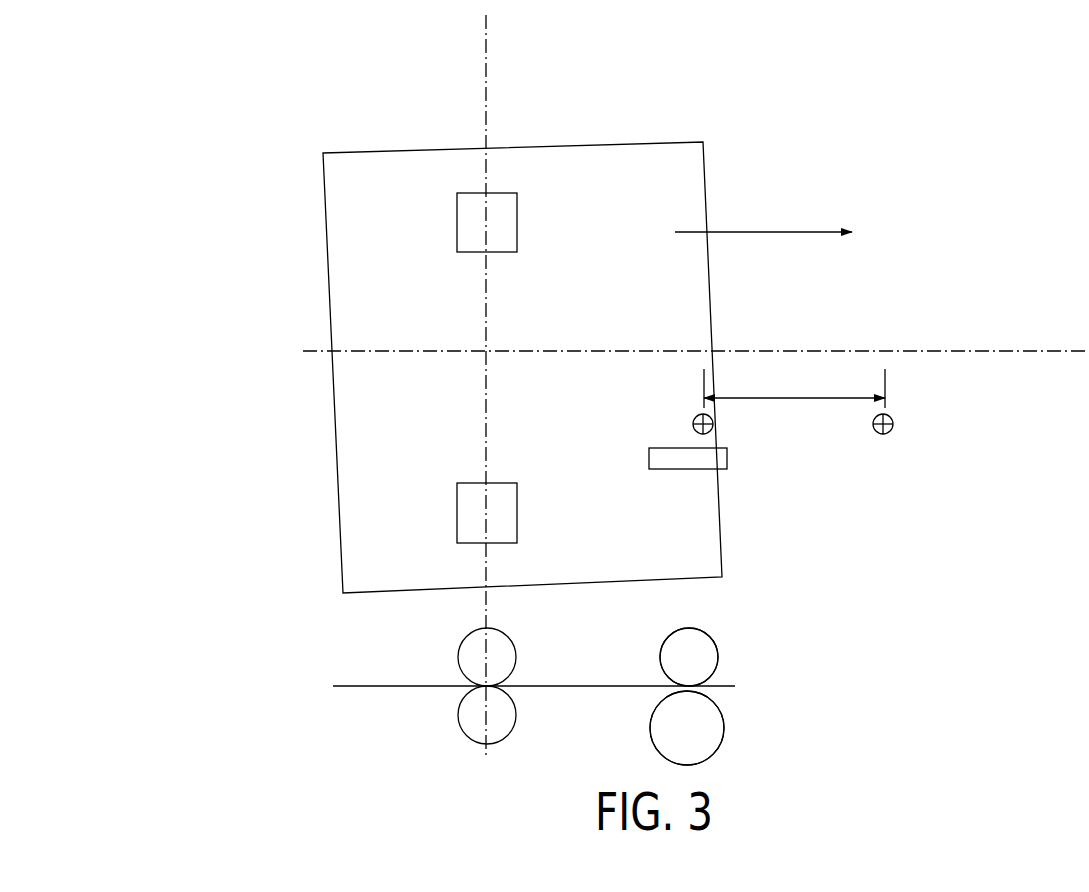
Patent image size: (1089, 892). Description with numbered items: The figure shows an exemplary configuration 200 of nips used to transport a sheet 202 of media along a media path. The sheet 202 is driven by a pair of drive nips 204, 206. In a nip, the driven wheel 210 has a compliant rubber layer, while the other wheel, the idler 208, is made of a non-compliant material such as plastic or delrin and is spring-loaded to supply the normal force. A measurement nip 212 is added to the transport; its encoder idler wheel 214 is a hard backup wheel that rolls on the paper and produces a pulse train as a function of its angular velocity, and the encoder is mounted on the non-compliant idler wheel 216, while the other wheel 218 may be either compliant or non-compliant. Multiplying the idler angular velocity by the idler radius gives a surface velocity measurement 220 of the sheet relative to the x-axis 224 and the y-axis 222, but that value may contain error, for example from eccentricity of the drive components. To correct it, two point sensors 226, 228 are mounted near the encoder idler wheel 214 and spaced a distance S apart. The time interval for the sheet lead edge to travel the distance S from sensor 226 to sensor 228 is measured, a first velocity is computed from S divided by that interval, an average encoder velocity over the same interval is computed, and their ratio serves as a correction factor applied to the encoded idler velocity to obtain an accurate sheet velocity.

The configuration of nips 200 is at (270, 119).
The sheet of media 202 is at (683, 141).
The drive nip 204 is at (473, 217).
The drive nip 206 is at (473, 511).
The idler wheel 208 is at (470, 658).
The driven nip wheel 210 is at (477, 717).
The measurement nip 212 is at (731, 461).
The encoder idler wheel 214 is at (717, 657).
The non-compliant idler wheel 216 is at (677, 658).
The other wheel of measurement nip 218 is at (677, 708).
The surface velocity measurement 220 is at (780, 233).
The y-axis 222 is at (492, 60).
The x-axis 224 is at (1052, 353).
The point sensor 226 is at (713, 424).
The point sensor 228 is at (893, 424).
The sensor spacing distance S is at (803, 397).